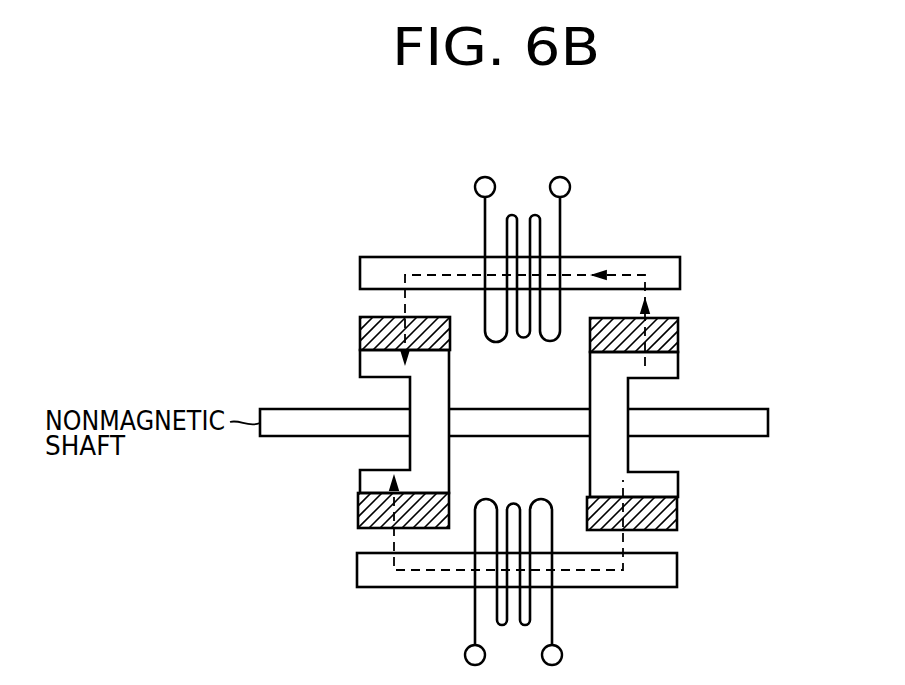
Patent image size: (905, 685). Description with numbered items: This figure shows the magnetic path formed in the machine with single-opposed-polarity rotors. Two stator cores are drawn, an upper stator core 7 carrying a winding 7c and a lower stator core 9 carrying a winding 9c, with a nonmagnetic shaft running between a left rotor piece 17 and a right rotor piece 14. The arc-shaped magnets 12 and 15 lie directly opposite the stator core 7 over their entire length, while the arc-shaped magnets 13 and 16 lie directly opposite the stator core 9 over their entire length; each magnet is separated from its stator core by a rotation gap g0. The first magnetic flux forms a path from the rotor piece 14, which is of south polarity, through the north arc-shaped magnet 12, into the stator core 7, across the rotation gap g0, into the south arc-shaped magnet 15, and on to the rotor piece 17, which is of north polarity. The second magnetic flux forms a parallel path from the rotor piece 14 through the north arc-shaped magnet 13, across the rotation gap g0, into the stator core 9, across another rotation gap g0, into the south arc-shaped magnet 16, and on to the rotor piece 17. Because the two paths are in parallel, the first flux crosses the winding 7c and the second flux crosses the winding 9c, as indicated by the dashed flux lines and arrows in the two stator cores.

The stator core 7 is at (392, 256).
The winding 7c is at (484, 221).
The stator core 9 is at (400, 587).
The winding 9c is at (475, 617).
The arc-shaped magnet 12 is at (677, 337).
The arc-shaped magnet 13 is at (680, 512).
The rotor piece 14 is at (590, 467).
The arc-shaped magnet 15 is at (358, 333).
The arc-shaped magnet 16 is at (358, 512).
The rotor piece 17 is at (449, 377).
The rotation gap g0 is at (717, 565).